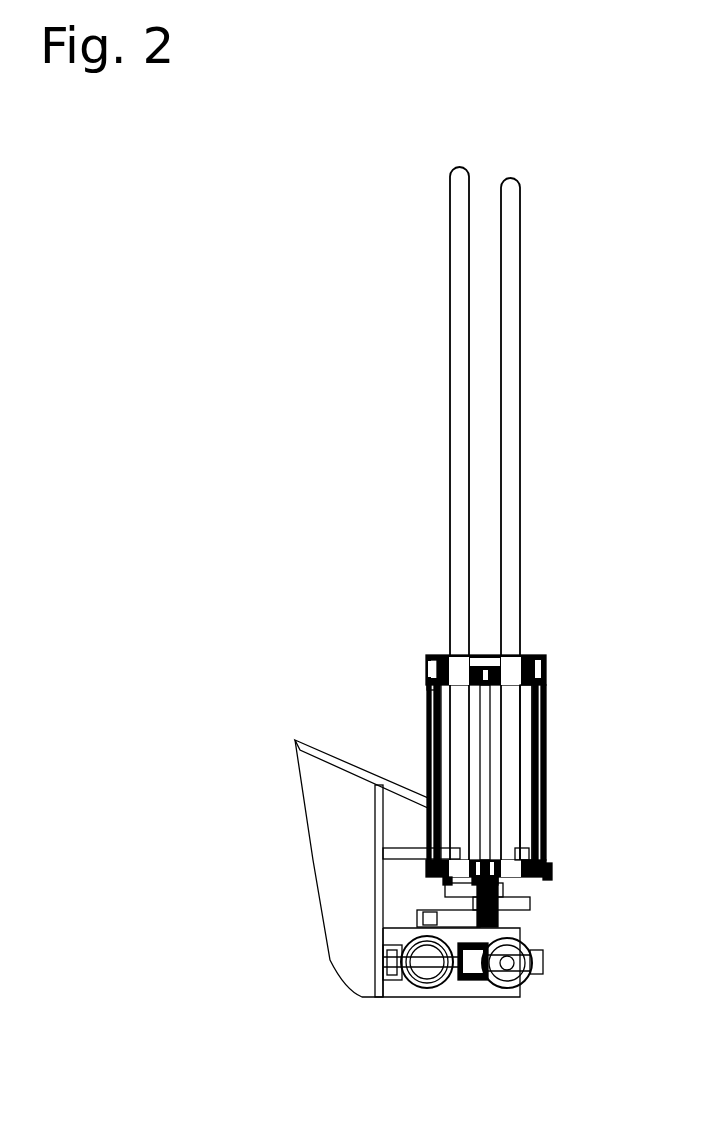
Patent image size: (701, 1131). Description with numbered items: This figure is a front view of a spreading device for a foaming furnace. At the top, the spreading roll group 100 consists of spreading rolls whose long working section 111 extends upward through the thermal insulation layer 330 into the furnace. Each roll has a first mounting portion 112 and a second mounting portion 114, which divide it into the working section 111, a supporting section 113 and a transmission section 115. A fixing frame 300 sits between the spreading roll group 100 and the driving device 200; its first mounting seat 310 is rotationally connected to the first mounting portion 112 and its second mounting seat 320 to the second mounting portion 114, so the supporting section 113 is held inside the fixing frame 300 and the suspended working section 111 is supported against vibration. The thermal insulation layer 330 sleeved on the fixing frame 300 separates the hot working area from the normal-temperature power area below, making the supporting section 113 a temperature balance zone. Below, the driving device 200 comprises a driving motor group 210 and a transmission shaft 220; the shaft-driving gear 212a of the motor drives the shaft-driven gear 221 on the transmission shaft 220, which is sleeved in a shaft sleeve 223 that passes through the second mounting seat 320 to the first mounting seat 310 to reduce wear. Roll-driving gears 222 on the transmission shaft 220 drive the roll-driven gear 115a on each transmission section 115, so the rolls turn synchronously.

The spreading roll group 100 is at (460, 624).
The working section 111 is at (512, 566).
The first mounting portion 112 is at (546, 680).
The supporting section 113 is at (456, 751).
The second mounting portion 114 is at (538, 867).
The transmission section 115 is at (500, 890).
The roll-driven gear 115a is at (447, 878).
The driving device 200 is at (541, 965).
The driving motor group 210 is at (362, 986).
The shaft-driving gear 212a is at (394, 944).
The transmission shaft 220 is at (401, 960).
The shaft-driven gear 221 is at (480, 913).
The roll-driving gear 222 is at (445, 890).
The shaft sleeve 223 is at (482, 788).
The fixing frame 300 is at (528, 745).
The first mounting seat 310 is at (428, 677).
The second mounting seat 320 is at (520, 854).
The thermal insulation layer 330 is at (543, 702).